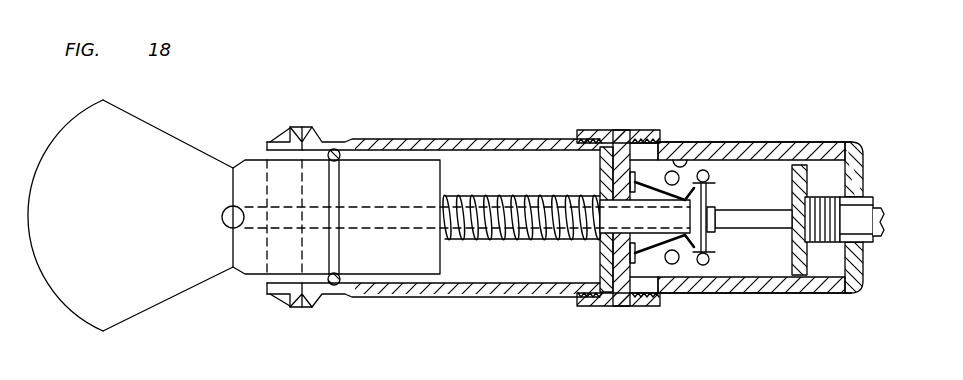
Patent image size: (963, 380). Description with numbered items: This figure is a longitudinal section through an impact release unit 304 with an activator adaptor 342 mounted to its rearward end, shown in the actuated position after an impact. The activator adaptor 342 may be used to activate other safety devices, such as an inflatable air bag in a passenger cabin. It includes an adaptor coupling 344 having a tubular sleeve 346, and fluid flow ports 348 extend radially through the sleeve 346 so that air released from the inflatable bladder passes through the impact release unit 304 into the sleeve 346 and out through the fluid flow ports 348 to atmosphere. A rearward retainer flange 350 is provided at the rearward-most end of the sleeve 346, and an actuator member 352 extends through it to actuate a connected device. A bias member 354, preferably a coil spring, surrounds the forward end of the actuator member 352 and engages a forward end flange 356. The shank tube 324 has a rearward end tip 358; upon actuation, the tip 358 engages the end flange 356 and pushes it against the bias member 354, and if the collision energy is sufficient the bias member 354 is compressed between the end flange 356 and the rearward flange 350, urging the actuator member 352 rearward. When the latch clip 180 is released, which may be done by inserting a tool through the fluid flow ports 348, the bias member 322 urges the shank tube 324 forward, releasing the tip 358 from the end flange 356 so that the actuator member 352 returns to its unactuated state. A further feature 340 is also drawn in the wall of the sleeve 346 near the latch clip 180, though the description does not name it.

The impact release unit 304 is at (140, 117).
The bias member 322 is at (518, 197).
The shank tube 324 is at (627, 207).
The latch clip 180 is at (647, 180).
The notch 340 is at (677, 155).
The activator adaptor 342 is at (743, 134).
The adaptor coupling 344 is at (608, 305).
The tubular sleeve 346 is at (710, 288).
The fluid flow ports 348 is at (675, 266).
The rearward retainer flange 350 is at (853, 182).
The actuator member 352 is at (877, 223).
The bias member 354 is at (823, 200).
The forward end flange 356 is at (792, 192).
The rearward end tip 358 is at (780, 218).